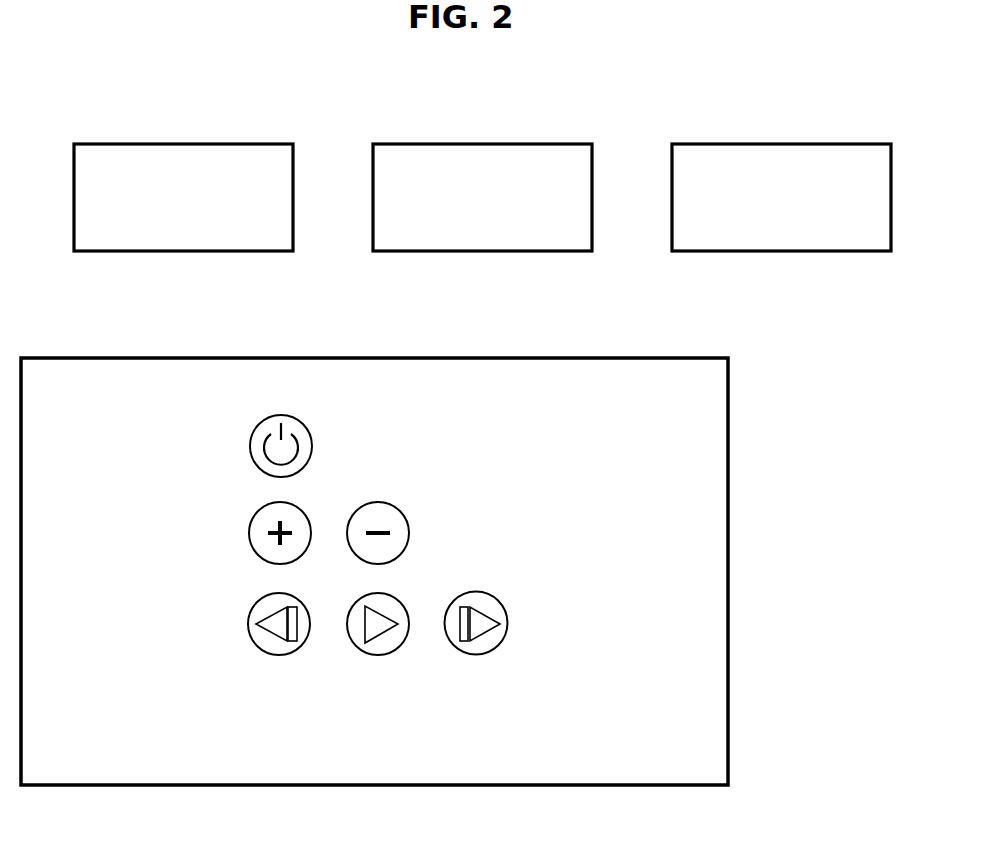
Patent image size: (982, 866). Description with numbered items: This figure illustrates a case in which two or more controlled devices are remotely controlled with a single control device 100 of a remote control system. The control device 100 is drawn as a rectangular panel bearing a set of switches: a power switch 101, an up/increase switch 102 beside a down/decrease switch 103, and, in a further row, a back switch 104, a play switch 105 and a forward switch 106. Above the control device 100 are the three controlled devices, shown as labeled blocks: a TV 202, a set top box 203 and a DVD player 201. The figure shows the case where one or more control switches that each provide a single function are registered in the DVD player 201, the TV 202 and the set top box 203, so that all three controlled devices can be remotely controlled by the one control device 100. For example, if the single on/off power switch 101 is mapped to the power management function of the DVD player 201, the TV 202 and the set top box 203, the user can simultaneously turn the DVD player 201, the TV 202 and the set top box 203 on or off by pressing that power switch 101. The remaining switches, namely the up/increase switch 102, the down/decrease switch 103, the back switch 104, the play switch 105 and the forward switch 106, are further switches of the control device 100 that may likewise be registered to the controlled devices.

The control device 100 is at (728, 515).
The power switch 101 is at (250, 440).
The up/increase switch 102 is at (250, 528).
The down/decrease switch 103 is at (410, 525).
The back switch 104 is at (248, 624).
The play switch 105 is at (368, 652).
The forward switch 106 is at (508, 615).
The DVD player 201 is at (779, 143).
The TV 202 is at (181, 143).
The set top box 203 is at (480, 143).